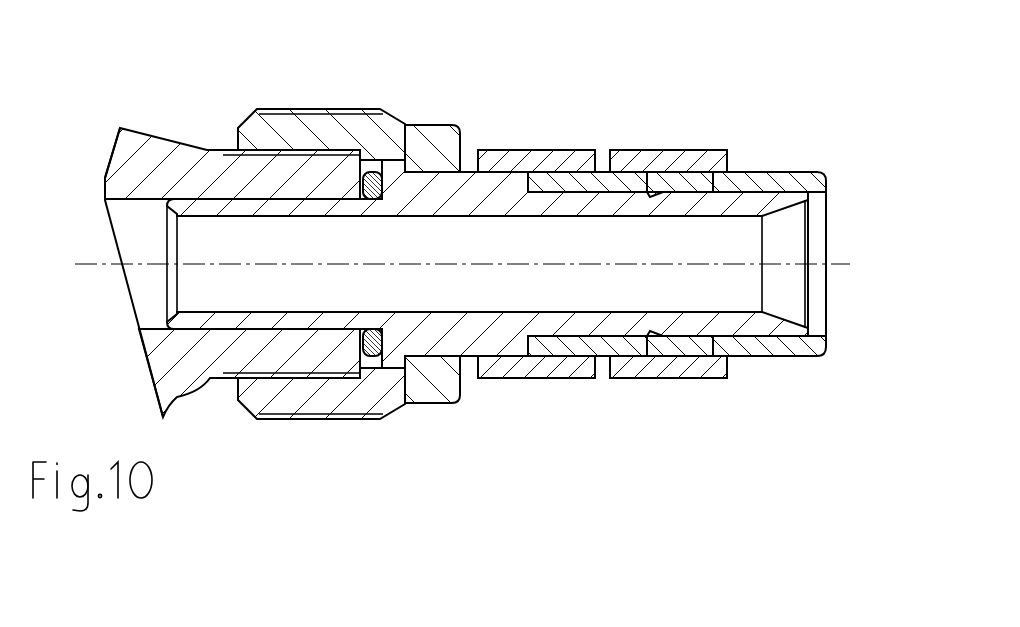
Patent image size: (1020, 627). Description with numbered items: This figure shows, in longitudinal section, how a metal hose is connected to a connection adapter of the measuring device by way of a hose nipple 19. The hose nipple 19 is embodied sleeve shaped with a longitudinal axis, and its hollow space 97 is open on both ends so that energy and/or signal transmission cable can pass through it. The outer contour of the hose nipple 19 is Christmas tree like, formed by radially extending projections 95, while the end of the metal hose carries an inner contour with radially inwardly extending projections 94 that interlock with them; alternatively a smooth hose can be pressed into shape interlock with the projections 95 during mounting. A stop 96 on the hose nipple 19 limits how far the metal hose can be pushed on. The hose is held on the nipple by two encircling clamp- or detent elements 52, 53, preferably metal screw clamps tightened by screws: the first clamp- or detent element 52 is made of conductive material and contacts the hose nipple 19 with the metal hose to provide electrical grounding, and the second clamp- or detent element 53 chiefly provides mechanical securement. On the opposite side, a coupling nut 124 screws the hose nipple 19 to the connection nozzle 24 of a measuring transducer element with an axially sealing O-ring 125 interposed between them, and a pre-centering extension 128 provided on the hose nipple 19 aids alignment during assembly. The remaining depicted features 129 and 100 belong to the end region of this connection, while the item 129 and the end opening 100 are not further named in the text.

The connection nozzle 24 is at (197, 147).
The upper clamping nut half 129 is at (302, 148).
The coupling nut 124 is at (333, 403).
The O-ring 125 is at (387, 170).
The hose nipple 19 is at (497, 340).
The pre-centering extension 128 is at (243, 320).
The hollow space 97 is at (447, 293).
The clamp- or detent element 52 is at (547, 157).
The second clamp- or detent element 53 is at (685, 157).
The stop 96 is at (533, 343).
The radially extending projections 95 is at (642, 337).
The radially inwardly extending projections 94 is at (713, 360).
The end opening of tube 100 is at (732, 262).